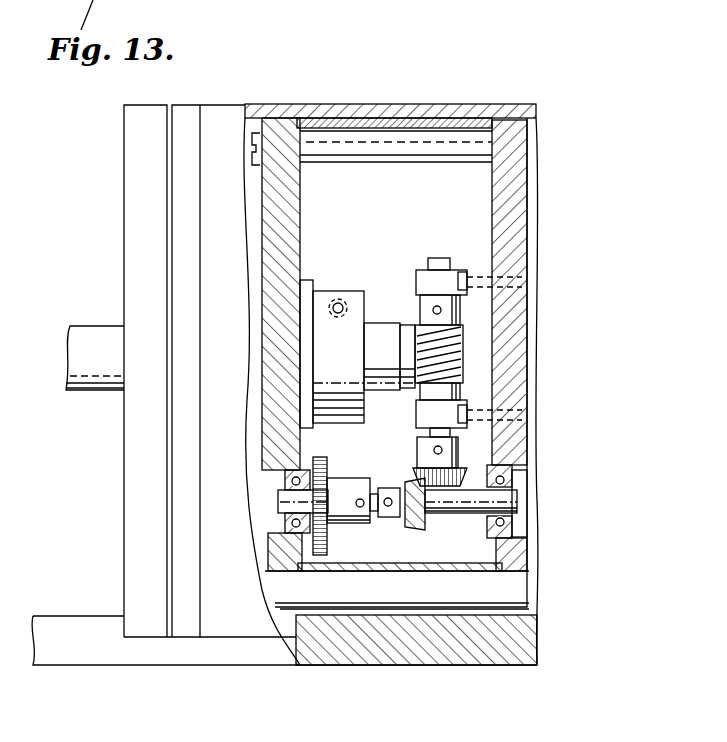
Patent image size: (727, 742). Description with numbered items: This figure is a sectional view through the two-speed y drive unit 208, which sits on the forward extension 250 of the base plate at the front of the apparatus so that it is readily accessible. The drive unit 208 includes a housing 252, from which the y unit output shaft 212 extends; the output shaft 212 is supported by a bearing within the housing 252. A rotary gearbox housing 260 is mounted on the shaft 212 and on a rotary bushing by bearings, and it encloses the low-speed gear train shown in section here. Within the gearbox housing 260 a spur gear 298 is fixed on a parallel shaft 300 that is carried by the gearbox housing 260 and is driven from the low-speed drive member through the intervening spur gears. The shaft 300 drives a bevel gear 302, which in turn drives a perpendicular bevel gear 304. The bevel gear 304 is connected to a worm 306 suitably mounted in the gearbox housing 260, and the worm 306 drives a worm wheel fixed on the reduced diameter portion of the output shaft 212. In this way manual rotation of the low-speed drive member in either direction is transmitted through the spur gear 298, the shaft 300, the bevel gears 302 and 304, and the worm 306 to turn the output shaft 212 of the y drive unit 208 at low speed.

The two-speed y drive unit 208 is at (460, 97).
The y unit output shaft 212 is at (86, 336).
The forward extension of the base plate 250 is at (72, 652).
The housing 252 is at (263, 100).
The rotary gearbox housing 260 is at (366, 122).
The spur gear 298 is at (321, 556).
The parallel shaft 300 is at (288, 500).
The bevel gear 302 is at (421, 530).
The perpendicular bevel gear 304 is at (472, 470).
The worm 306 is at (462, 348).